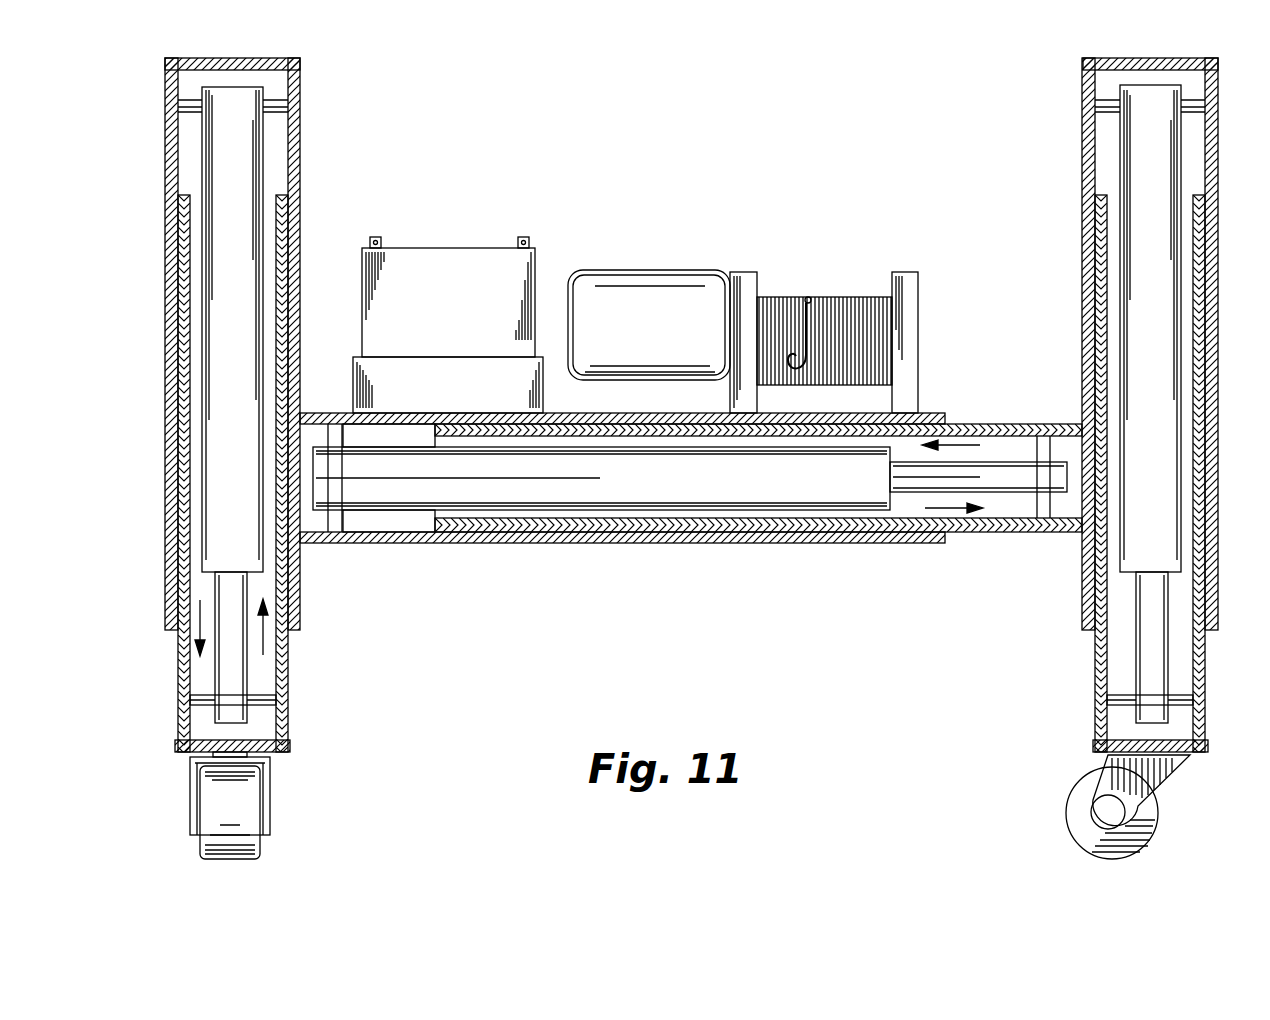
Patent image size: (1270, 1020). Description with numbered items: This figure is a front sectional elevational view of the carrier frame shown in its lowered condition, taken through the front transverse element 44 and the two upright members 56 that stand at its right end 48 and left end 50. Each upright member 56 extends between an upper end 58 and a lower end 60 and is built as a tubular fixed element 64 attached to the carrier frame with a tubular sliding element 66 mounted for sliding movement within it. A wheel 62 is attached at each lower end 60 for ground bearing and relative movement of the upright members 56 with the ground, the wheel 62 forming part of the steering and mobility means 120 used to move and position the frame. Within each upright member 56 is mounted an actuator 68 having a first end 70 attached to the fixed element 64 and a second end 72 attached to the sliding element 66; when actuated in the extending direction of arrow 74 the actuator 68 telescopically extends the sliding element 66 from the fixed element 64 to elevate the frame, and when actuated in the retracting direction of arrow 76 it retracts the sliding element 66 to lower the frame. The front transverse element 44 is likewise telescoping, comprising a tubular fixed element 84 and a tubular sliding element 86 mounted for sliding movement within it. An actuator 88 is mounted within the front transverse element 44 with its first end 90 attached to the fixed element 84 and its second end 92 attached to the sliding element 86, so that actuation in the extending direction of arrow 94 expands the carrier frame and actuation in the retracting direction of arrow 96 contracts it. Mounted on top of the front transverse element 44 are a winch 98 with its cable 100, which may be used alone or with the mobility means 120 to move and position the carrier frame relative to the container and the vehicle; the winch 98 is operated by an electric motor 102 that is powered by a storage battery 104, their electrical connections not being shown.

The front transverse element 44 is at (600, 543).
The right end of front transverse element 48 is at (330, 543).
The left end of front transverse element 50 is at (1060, 535).
The upright member 56 is at (302, 155).
The upper end of upright member 58 is at (280, 56).
The lower end of upright member 60 is at (290, 746).
The wheel 62 is at (250, 858).
The tubular fixed element 64 is at (300, 208).
The tubular sliding element 66 is at (288, 700).
The actuator 68 is at (202, 263).
The first end of actuator 70 is at (265, 125).
The second end of actuator 72 is at (215, 722).
The extending direction arrow 74 is at (178, 649).
The retracting direction arrow 76 is at (276, 645).
The tubular fixed element of front transverse element 84 is at (775, 543).
The tubular sliding element of front transverse element 86 is at (1020, 537).
The actuator 88 is at (670, 510).
The first end of actuator 90 is at (357, 513).
The second end of actuator 92 is at (1030, 460).
The extending direction arrow 94 is at (935, 510).
The retracting direction arrow 96 is at (963, 445).
The winch 98 is at (770, 272).
The cable 100 is at (828, 297).
The electric motor 102 is at (655, 270).
The storage battery 104 is at (447, 248).
The steering and mobility means 120 is at (270, 798).